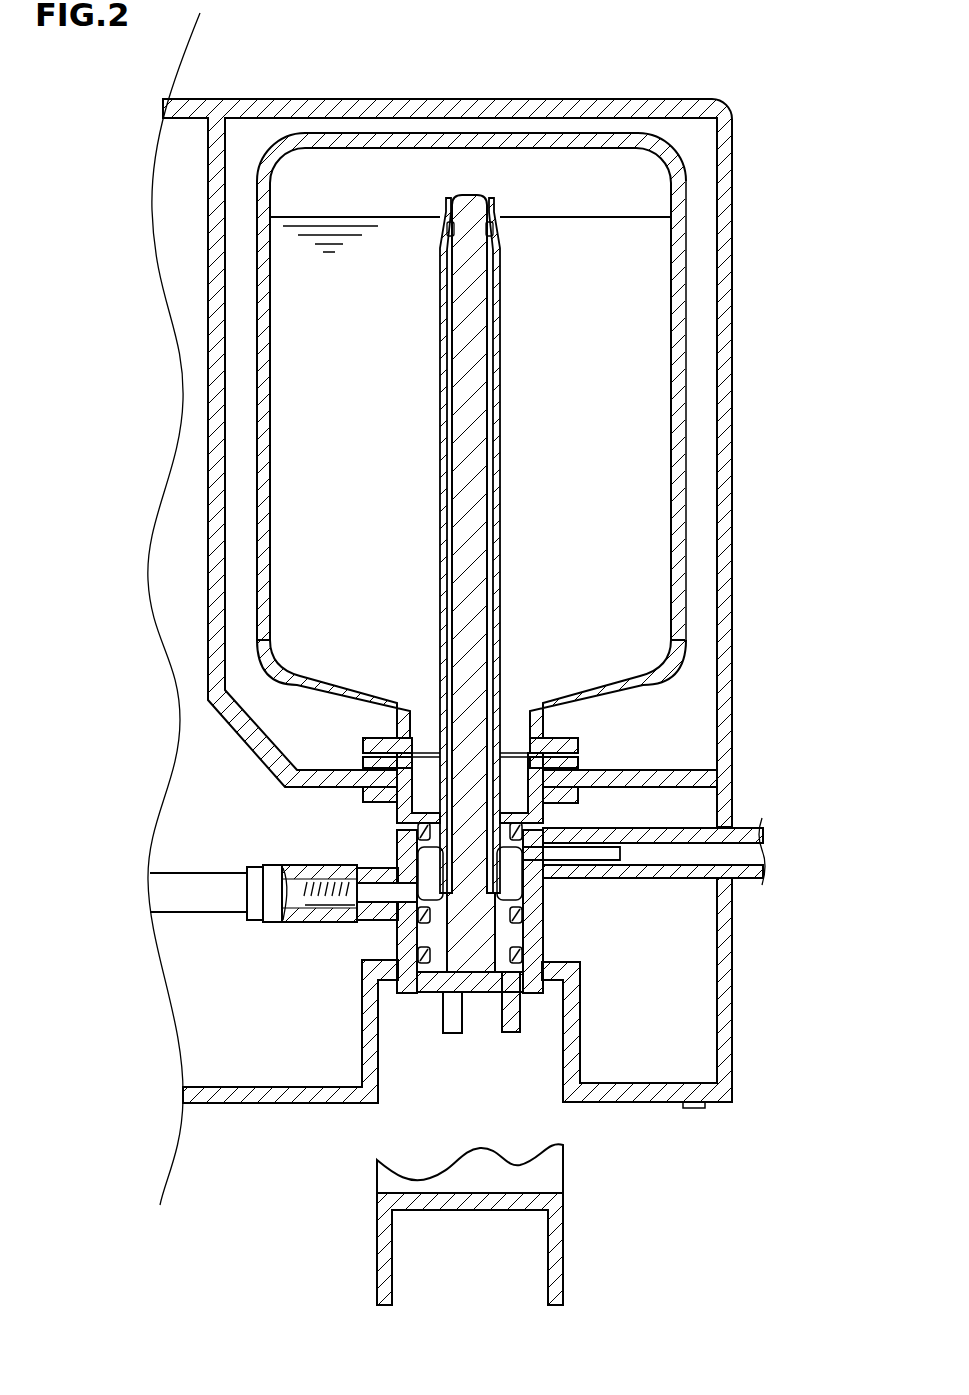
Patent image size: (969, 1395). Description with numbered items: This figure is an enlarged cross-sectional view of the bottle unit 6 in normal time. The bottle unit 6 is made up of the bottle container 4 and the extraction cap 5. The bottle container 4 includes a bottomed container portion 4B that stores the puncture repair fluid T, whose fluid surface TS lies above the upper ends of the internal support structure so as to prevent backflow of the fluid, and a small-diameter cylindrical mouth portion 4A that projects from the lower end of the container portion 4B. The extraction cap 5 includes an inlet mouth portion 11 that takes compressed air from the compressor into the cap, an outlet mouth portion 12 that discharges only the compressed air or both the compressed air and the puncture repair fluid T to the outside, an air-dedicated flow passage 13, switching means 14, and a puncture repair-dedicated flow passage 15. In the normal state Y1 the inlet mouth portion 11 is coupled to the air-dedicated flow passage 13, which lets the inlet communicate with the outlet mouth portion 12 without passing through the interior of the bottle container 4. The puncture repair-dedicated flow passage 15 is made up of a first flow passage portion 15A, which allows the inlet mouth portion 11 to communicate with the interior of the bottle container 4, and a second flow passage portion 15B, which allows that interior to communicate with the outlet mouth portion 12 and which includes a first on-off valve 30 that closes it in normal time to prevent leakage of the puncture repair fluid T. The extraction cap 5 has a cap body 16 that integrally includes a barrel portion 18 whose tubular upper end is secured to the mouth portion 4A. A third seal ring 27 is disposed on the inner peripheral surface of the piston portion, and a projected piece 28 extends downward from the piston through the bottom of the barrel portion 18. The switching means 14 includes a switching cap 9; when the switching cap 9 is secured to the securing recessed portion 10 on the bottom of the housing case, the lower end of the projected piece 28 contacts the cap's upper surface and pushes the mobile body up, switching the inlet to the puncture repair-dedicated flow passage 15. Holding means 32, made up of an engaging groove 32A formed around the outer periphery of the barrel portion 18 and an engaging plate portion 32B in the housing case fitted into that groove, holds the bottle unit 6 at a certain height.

The bottle container 4 is at (255, 606).
The mouth portion 4A is at (522, 700).
The container portion 4B is at (690, 432).
The extraction cap 5 is at (372, 828).
The bottle unit 6 is at (99, 672).
The switching cap 9 is at (378, 1250).
The securing recessed portion 10 is at (418, 1082).
The inlet mouth portion 11 is at (333, 907).
The outlet mouth portion 12 is at (620, 850).
The air-dedicated flow passage 13 is at (522, 895).
The switching means 14 is at (360, 1216).
The puncture repair-dedicated flow passage 15 is at (802, 732).
The first flow passage portion 15A is at (540, 745).
The second flow passage portion 15B is at (545, 795).
The cap body 16 is at (396, 925).
The barrel portion 18 is at (396, 838).
The third seal ring 27 is at (497, 950).
The projected piece 28 is at (522, 1008).
The first on-off valve 30 is at (532, 828).
The holding means 32 is at (420, 608).
The engaging groove 32A is at (360, 780).
The engaging plate portion 32B is at (345, 775).
The puncture repair fluid T is at (598, 338).
The fluid surface TS is at (578, 215).
The normal state Y1 is at (698, 545).